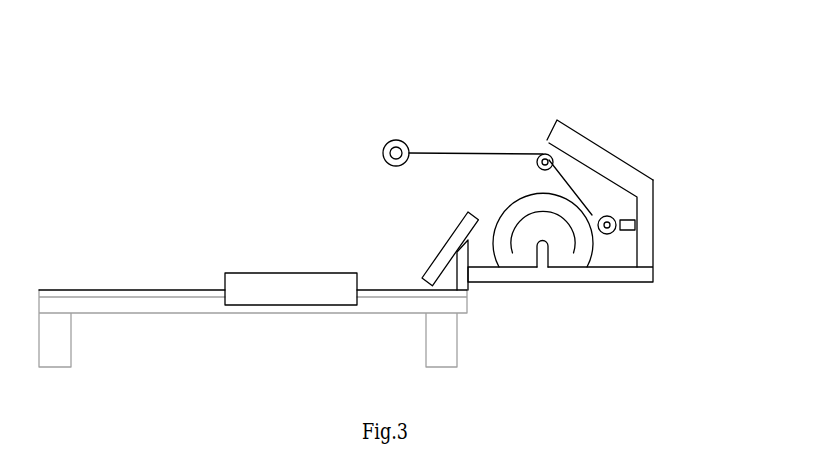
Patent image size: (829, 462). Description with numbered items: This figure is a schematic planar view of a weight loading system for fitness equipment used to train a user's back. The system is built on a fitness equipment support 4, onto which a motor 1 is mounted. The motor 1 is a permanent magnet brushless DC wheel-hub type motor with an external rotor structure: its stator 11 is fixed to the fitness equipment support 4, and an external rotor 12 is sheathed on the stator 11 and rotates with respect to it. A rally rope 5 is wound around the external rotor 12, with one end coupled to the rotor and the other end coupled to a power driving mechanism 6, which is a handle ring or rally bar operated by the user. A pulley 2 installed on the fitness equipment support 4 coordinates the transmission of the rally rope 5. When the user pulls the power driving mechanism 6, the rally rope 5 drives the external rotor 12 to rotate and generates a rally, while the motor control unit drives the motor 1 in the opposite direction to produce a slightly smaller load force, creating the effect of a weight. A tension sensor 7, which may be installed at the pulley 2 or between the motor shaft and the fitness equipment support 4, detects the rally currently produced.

The motor 1 is at (517, 195).
The pulley 2 is at (545, 146).
The fitness equipment support 4 is at (504, 292).
The rally rope 5 is at (595, 180).
The power driving mechanism 6 is at (374, 139).
The tension sensor 7 is at (643, 223).
The stator 11 is at (559, 265).
The external rotor 12 is at (601, 246).